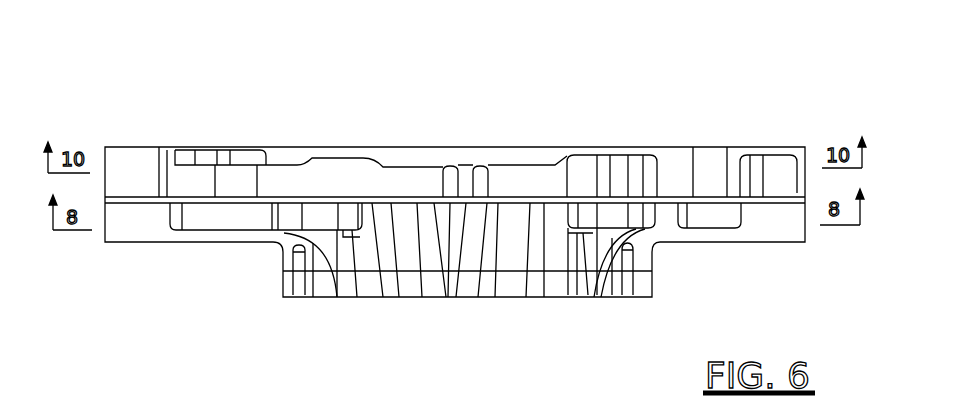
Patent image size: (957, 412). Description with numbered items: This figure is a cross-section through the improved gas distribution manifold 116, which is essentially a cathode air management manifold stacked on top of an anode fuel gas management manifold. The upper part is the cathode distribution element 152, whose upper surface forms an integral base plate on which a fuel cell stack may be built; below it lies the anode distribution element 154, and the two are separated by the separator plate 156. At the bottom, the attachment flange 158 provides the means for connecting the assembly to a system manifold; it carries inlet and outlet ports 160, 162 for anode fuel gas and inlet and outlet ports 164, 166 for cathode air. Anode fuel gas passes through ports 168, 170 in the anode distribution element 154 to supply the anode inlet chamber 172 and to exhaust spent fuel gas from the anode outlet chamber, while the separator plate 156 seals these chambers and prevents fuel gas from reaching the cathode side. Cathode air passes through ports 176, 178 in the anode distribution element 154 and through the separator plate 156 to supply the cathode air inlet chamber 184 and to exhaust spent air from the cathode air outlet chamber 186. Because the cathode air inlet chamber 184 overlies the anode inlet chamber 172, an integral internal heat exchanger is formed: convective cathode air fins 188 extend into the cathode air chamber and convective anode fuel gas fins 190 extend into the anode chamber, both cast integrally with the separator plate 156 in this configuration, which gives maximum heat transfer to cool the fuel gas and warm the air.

The gas distribution manifold 116 is at (423, 128).
The cathode distribution element 152 is at (795, 145).
The anode distribution element 154 is at (758, 237).
The separator plate 156 is at (780, 197).
The attachment flange 158 is at (283, 278).
The anode fuel gas inlet port 160 is at (598, 297).
The anode fuel gas outlet port 162 is at (333, 295).
The cathode air inlet port 164 is at (527, 297).
The cathode air outlet port 166 is at (407, 298).
The anode fuel gas port 168 is at (590, 238).
The anode fuel gas port 170 is at (345, 238).
The anode inlet chamber 172 is at (580, 222).
The cathode air port 176 is at (513, 248).
The cathode air port 178 is at (422, 248).
The cathode air inlet chamber 184 is at (527, 180).
The cathode air outlet chamber 186 is at (300, 178).
The cathode air fins 188 is at (623, 175).
The anode fuel gas fins 190 is at (622, 215).